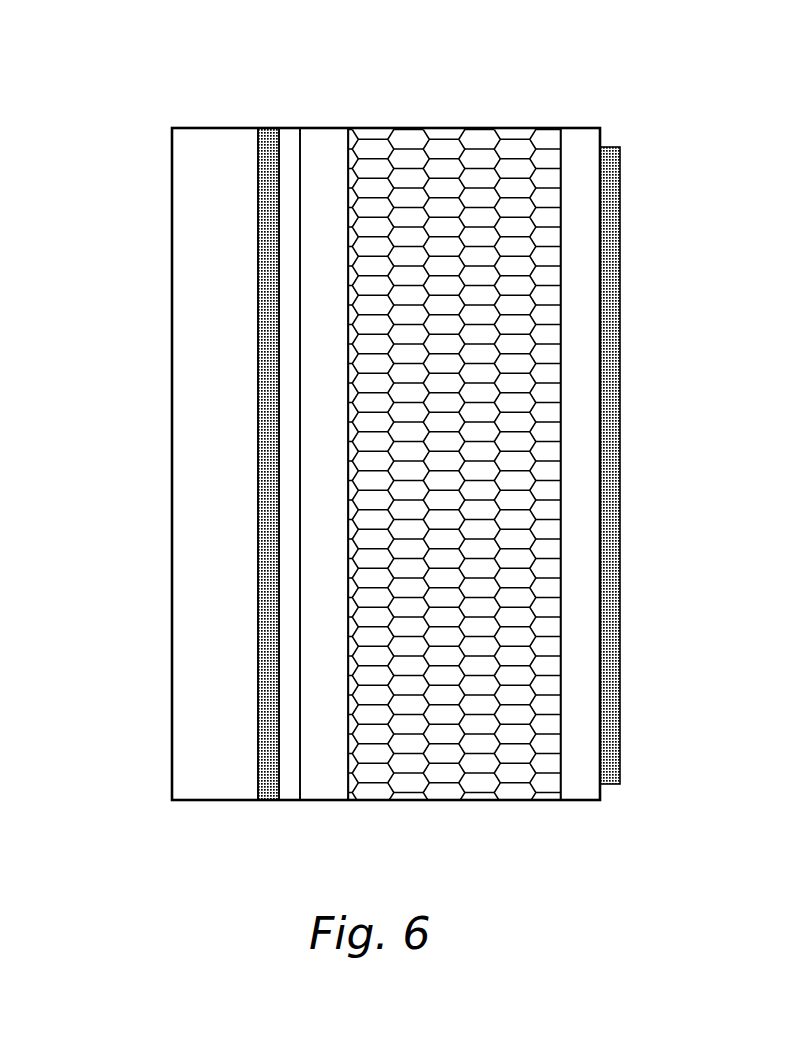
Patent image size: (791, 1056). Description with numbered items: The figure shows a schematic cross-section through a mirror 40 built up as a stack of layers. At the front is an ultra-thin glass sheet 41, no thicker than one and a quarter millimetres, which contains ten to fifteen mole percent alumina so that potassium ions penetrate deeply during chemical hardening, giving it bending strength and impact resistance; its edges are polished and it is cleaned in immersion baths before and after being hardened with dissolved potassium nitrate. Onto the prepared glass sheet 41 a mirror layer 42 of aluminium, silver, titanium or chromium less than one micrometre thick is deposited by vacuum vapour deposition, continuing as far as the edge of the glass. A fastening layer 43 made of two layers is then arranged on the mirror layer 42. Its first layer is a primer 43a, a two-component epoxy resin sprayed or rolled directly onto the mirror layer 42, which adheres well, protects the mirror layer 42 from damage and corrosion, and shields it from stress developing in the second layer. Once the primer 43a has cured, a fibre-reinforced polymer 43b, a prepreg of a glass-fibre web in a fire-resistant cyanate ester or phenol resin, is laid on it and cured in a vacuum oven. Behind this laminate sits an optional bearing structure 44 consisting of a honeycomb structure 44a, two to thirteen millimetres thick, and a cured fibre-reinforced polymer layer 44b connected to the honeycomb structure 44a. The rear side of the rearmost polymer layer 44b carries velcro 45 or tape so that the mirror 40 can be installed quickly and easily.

The mirror 40 is at (124, 104).
The glass sheet 41 is at (207, 788).
The mirror layer 42 is at (268, 800).
The fastening layer 43 is at (308, 456).
The primer 43a is at (290, 137).
The fibre-reinforced polymer 43b is at (326, 137).
The bearing structure 44 is at (469, 455).
The honeycomb structure 44a is at (437, 148).
The fibre-reinforced polymer layer 44b is at (578, 135).
The velcro 45 is at (621, 320).